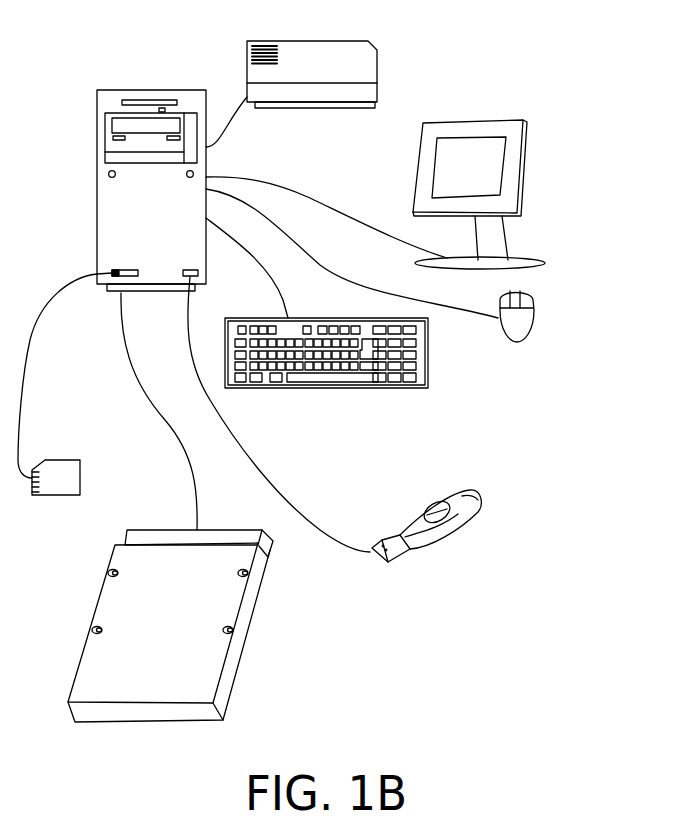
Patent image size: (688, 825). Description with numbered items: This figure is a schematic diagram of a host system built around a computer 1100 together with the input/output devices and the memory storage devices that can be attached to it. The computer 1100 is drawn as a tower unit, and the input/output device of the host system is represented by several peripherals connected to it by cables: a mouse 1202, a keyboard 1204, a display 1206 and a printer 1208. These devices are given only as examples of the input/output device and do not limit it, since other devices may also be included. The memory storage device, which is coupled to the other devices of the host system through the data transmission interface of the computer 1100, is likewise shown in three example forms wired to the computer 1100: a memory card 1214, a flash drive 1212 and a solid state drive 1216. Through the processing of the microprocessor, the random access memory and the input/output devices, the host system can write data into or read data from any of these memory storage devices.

The computer 1100 is at (155, 90).
The mouse 1202 is at (535, 320).
The keyboard 1204 is at (428, 365).
The display 1206 is at (482, 121).
The printer 1208 is at (308, 41).
The flash drive 1212 is at (422, 513).
The memory card 1214 is at (80, 468).
The solid state drive 1216 is at (220, 516).